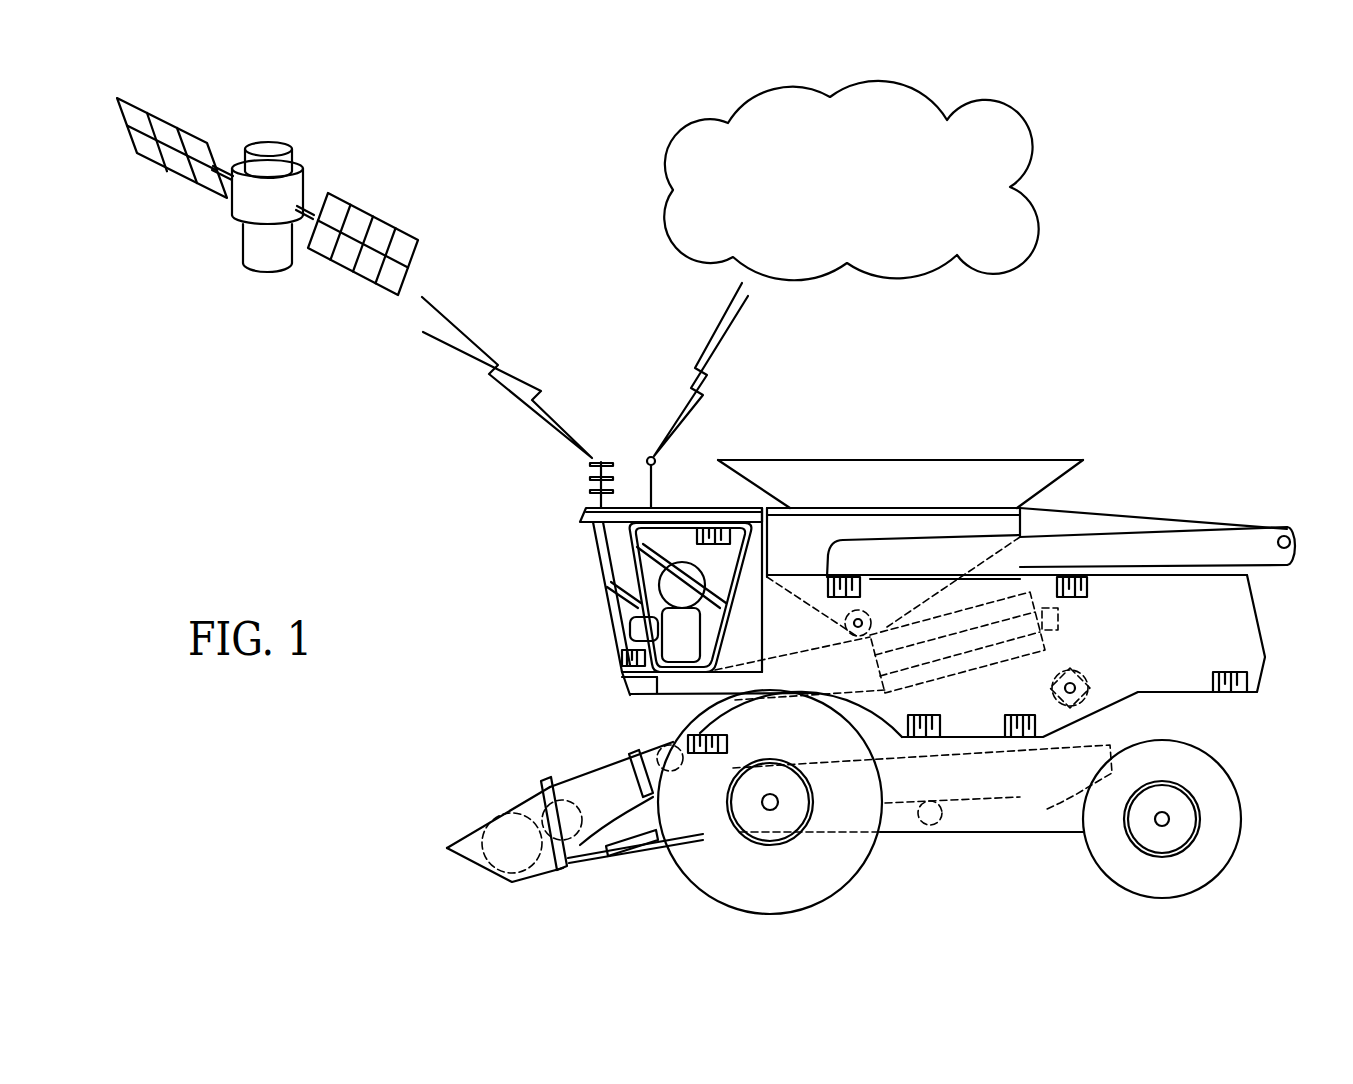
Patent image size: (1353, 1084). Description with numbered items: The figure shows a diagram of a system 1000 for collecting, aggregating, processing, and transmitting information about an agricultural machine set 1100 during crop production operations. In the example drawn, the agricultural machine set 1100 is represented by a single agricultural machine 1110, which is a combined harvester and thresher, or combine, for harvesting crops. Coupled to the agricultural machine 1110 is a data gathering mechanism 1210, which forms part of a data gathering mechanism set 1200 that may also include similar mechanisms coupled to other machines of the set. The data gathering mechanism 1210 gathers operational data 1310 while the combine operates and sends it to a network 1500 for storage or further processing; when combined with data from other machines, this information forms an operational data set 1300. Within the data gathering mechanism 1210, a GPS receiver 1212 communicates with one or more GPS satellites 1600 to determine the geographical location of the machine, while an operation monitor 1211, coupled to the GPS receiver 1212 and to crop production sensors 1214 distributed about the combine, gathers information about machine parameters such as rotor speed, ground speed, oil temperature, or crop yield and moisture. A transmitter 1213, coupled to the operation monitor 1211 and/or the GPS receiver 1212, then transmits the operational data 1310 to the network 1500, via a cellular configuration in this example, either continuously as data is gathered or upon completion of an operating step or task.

The system 1000 is at (823, 644).
The agricultural machine set 1100 is at (871, 644).
The agricultural machine 1110 is at (1183, 548).
The data gathering mechanism set 1200 is at (644, 635).
The data gathering mechanism 1210 is at (656, 635).
The operation monitor 1211 is at (627, 698).
The GPS receiver 1212 is at (590, 478).
The transmitter 1213 is at (647, 459).
The crop production sensors 1214 is at (713, 528).
The operational data set 1300 is at (731, 369).
The operational data 1310 is at (727, 369).
The network 1500 is at (868, 205).
The GPS satellites 1600 is at (236, 243).